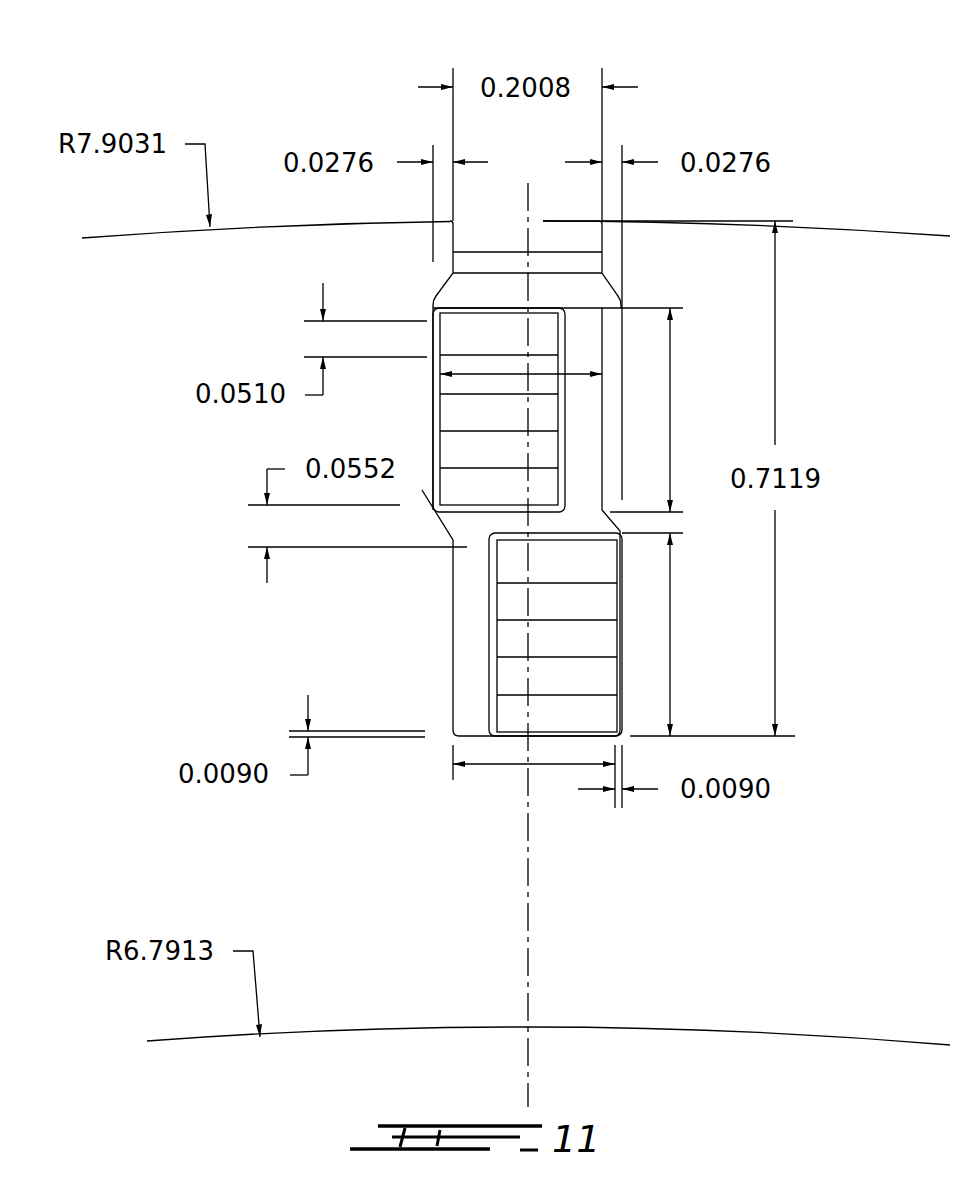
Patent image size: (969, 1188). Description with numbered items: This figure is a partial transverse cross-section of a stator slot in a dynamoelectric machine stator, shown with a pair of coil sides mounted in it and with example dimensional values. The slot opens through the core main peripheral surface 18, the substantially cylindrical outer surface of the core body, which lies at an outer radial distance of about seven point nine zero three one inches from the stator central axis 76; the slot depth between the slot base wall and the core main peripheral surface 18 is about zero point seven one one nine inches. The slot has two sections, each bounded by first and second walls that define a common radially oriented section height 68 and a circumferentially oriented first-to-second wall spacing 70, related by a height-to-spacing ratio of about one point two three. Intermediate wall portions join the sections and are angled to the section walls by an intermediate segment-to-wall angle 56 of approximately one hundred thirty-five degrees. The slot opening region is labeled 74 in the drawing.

The core main peripheral surface 18 is at (406, 219).
The intermediate segment-to-wall angle 56 is at (425, 497).
The section height 68 is at (575, 522).
The first-to-second wall spacing 70 is at (502, 374).
The slot opening 74 is at (586, 80).
The stator central axis 76 is at (528, 967).